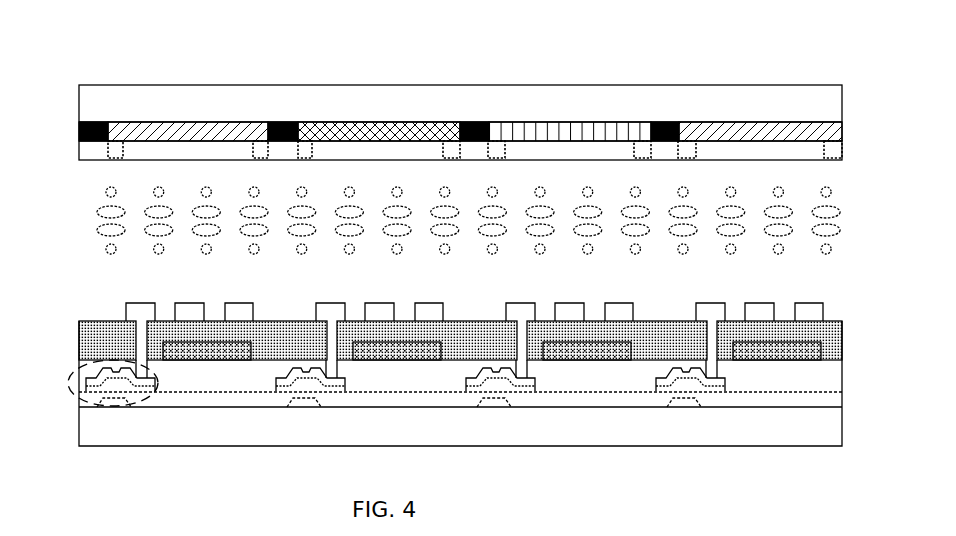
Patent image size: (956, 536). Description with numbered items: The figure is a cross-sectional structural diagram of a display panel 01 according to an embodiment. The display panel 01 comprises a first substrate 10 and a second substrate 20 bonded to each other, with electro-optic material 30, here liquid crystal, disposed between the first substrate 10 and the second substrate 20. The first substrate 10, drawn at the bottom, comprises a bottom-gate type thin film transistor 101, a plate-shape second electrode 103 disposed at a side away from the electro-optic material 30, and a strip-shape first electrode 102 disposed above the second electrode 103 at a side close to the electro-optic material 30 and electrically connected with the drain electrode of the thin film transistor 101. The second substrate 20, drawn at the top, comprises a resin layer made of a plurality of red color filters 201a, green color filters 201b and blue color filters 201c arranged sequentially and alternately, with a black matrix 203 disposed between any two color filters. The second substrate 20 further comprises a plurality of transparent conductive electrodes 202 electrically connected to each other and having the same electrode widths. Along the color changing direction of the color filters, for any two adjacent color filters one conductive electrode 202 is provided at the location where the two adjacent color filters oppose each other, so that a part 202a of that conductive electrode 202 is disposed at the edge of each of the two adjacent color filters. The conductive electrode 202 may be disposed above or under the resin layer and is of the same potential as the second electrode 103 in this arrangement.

The display panel 01 is at (407, 53).
The first substrate 10 is at (63, 302).
The second substrate 20 is at (67, 85).
The electro-optic material 30 is at (93, 187).
The thin film transistor 101 is at (121, 412).
The first electrode 102 is at (252, 298).
The second electrode 103 is at (211, 349).
The red color filter 201a is at (432, 125).
The green color filter 201b is at (593, 128).
The blue color filter 201c is at (190, 128).
The conductive electrode 202 is at (288, 160).
The part of the conductive electrode 202a is at (258, 151).
The black matrix 203 is at (673, 122).